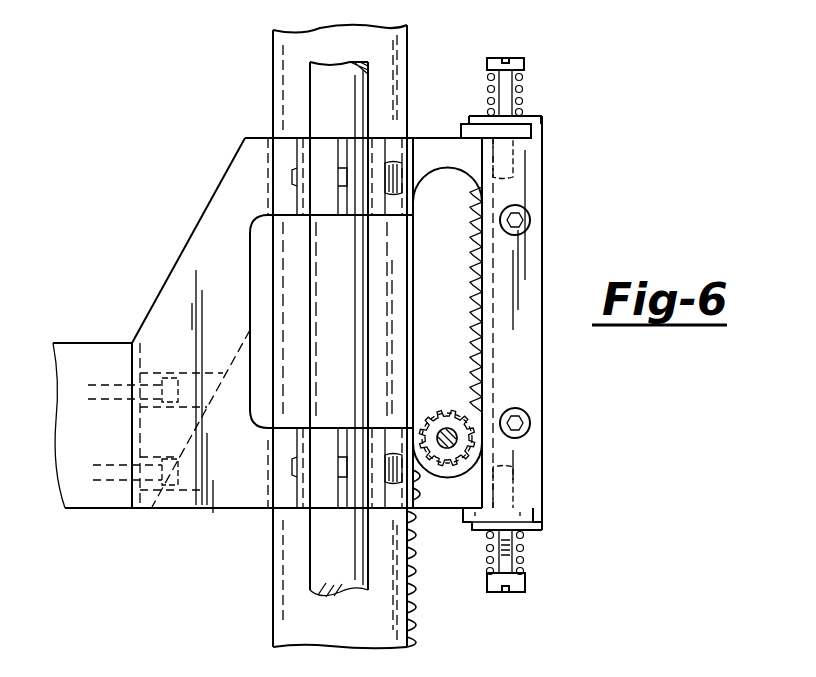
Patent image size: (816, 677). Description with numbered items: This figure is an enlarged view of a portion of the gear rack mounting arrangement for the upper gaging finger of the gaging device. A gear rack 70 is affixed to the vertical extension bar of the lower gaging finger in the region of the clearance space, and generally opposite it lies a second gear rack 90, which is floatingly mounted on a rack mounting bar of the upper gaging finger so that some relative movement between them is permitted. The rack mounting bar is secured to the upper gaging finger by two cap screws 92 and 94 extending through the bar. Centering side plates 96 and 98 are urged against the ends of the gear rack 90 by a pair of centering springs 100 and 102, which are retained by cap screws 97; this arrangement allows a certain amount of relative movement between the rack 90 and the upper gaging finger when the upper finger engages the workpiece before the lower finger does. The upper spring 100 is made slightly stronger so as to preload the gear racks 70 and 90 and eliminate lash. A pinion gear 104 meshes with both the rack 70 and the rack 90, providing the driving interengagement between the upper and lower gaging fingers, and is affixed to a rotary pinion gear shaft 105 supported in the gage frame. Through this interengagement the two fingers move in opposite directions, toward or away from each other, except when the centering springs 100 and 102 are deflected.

The gear rack 70 is at (425, 623).
The gear rack 90 is at (474, 190).
The cap screw 92 is at (532, 213).
The cap screw 94 is at (531, 418).
The centering side plate 96 is at (543, 128).
The cap screws 97 is at (522, 62).
The centering side plate 98 is at (547, 515).
The centering spring 100 is at (519, 90).
The centering spring 102 is at (523, 550).
The pinion gear 104 is at (450, 410).
The rotary pinion gear shaft 105 is at (437, 432).